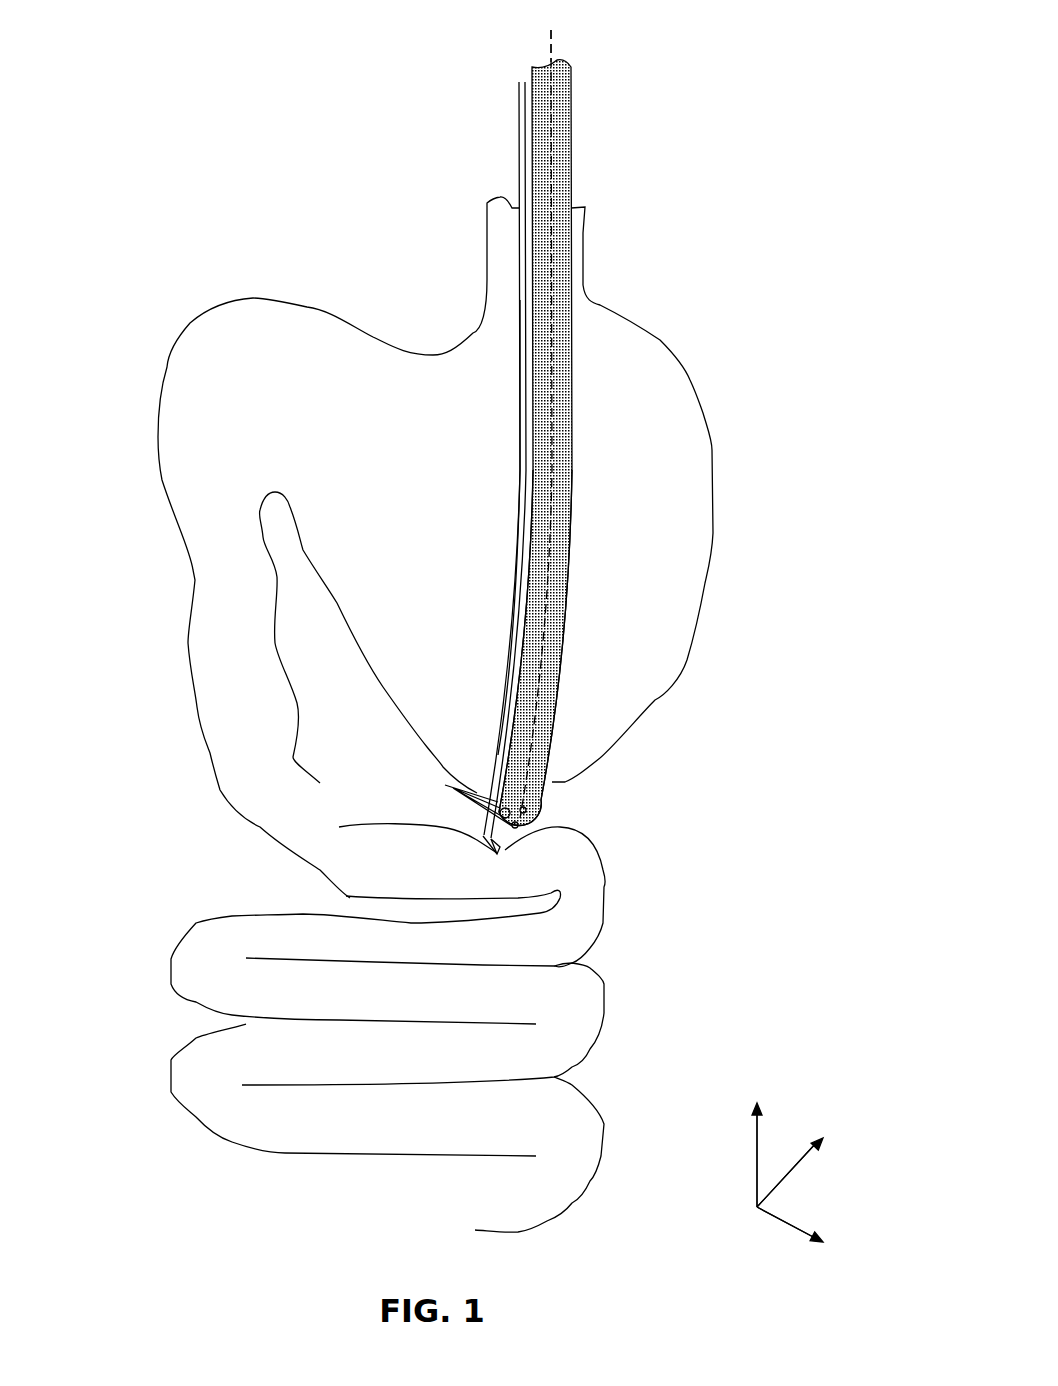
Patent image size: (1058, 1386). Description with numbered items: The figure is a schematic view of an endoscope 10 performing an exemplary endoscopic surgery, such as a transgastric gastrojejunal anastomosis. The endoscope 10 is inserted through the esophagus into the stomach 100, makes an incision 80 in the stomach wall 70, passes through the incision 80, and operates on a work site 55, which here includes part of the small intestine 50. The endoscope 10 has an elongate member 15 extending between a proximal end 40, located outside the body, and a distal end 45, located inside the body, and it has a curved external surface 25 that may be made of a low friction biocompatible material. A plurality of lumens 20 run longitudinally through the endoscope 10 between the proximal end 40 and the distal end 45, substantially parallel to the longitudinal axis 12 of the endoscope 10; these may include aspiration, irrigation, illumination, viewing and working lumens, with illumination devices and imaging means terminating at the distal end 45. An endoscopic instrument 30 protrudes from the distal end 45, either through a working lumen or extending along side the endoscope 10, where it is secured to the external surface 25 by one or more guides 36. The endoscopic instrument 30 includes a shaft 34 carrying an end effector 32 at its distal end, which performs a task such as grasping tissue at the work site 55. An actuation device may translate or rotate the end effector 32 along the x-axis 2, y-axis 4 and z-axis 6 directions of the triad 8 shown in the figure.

The x-axis 2 is at (780, 1223).
The y-axis 4 is at (795, 1173).
The z-axis 6 is at (757, 1150).
The triad 8 is at (728, 1176).
The endoscope 10 is at (606, 379).
The longitudinal axis 12 is at (553, 157).
The elongate member 15 is at (555, 490).
The lumens 20 is at (453, 788).
The external surface 25 is at (555, 530).
The endoscopic instrument 30 is at (495, 843).
The end effector 32 is at (483, 843).
The shaft 34 is at (523, 472).
The guides 36 is at (523, 313).
The proximal end 40 is at (592, 32).
The distal end 45 is at (558, 798).
The small intestine 50 is at (628, 871).
The work site 55 is at (520, 828).
The stomach wall 70 is at (661, 698).
The incision 80 is at (550, 778).
The stomach 100 is at (683, 585).